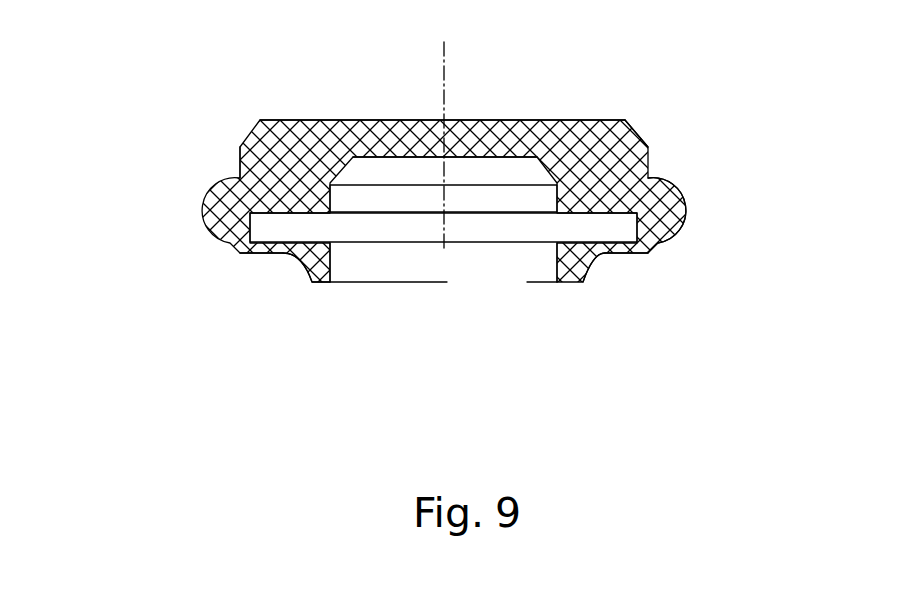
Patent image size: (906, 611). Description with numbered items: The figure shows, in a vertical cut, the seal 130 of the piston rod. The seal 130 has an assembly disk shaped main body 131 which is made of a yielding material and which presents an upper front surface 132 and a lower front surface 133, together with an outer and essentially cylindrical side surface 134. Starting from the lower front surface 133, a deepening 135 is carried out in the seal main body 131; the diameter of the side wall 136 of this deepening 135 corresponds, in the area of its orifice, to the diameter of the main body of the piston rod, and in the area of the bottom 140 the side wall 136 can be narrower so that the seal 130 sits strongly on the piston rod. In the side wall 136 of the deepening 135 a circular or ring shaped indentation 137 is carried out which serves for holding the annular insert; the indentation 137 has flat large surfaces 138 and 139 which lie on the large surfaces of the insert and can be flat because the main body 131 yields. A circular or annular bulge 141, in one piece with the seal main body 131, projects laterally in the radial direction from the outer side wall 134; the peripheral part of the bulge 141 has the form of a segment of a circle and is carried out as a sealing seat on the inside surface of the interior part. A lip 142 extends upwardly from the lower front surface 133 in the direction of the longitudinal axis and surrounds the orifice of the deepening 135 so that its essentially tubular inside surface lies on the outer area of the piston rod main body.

The seal 130 is at (213, 125).
The seal main body 131 is at (238, 163).
The upper front surface 132 is at (365, 128).
The lower front surface 133 is at (630, 255).
The outer side surface 134 is at (648, 158).
The deepening 135 is at (517, 293).
The side wall 136 is at (337, 288).
The indentation 137 is at (287, 243).
The large surface 138 is at (640, 207).
The large surface 139 is at (598, 256).
The bottom 140 is at (492, 158).
The bulge 141 is at (665, 242).
The lip 142 is at (557, 285).